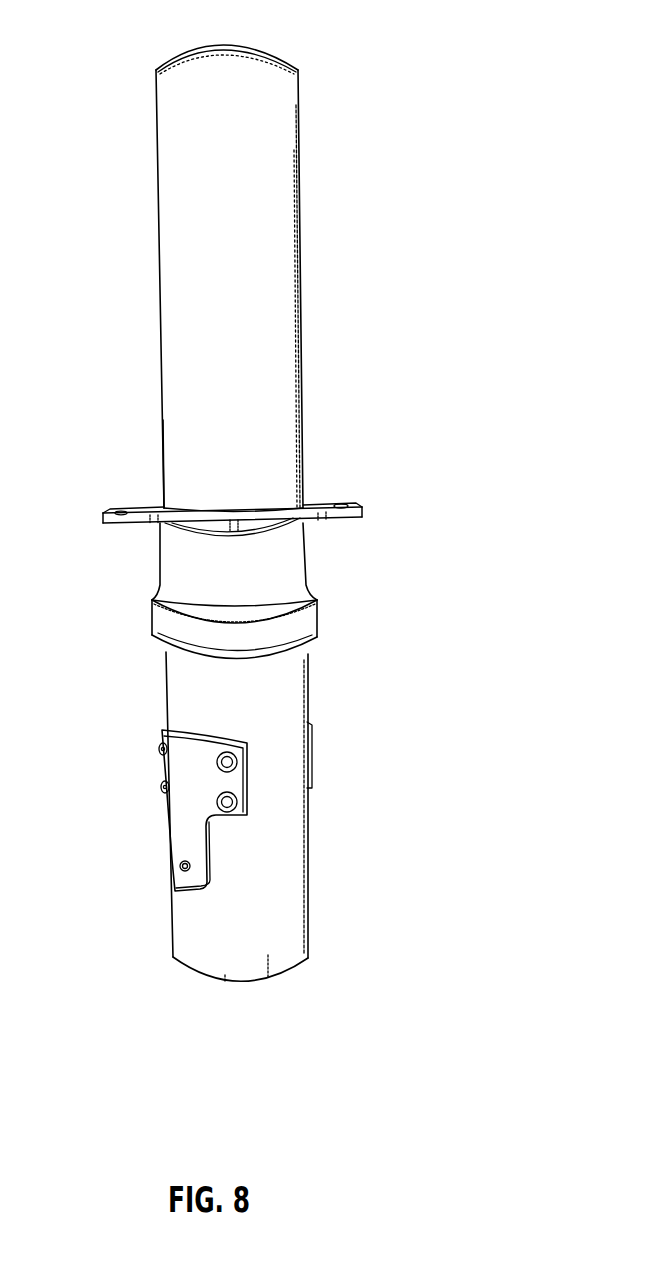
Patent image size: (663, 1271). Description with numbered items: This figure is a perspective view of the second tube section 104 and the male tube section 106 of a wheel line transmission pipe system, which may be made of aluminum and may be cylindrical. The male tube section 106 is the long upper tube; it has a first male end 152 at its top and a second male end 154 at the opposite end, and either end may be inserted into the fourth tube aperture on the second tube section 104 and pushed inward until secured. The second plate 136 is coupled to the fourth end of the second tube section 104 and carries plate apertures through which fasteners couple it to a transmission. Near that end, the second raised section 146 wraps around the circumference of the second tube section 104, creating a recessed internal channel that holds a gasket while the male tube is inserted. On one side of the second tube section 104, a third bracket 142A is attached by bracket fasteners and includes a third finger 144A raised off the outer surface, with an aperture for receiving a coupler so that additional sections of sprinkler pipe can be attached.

The male tube section 106 is at (165, 178).
The first male end 152 is at (262, 71).
The second male end 154 is at (176, 493).
The second plate 136 is at (357, 505).
The second tube section 104 is at (182, 560).
The second raised section 146 is at (175, 638).
The third bracket 142A is at (183, 772).
The third finger 144A is at (177, 877).